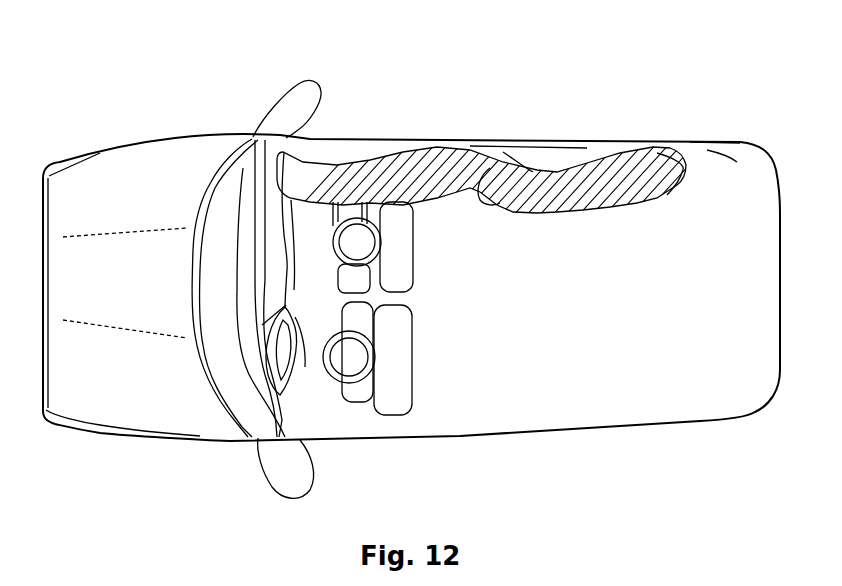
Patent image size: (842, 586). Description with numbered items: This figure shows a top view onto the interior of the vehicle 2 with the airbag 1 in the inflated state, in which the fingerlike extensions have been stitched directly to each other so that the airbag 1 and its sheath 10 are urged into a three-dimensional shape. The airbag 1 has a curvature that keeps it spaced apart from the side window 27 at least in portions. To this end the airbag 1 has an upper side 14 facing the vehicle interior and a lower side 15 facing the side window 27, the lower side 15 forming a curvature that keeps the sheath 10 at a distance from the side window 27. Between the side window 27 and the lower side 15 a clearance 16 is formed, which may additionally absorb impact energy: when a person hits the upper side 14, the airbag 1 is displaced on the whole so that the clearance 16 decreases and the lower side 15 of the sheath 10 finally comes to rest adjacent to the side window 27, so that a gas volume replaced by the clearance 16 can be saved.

The airbag 1 is at (658, 229).
The vehicle 2 is at (84, 491).
The sheath 10 is at (724, 143).
The upper side 14 is at (522, 218).
The lower side 15 is at (541, 163).
The clearance 16 is at (587, 152).
The side window 27 is at (362, 137).